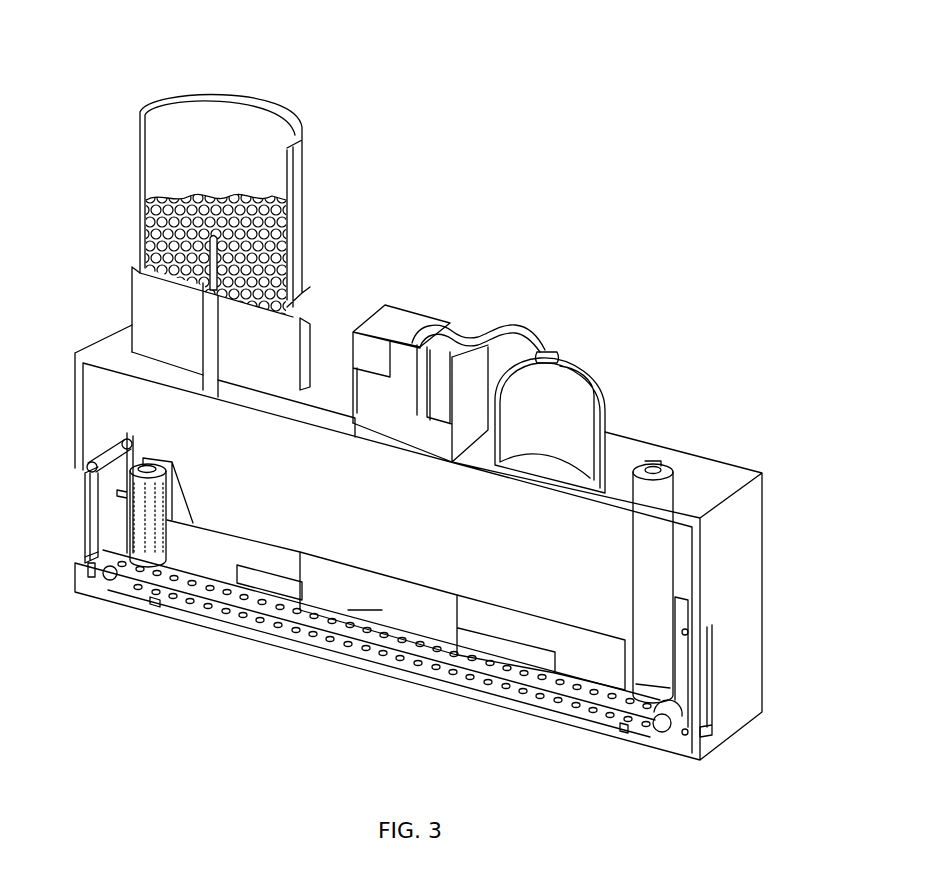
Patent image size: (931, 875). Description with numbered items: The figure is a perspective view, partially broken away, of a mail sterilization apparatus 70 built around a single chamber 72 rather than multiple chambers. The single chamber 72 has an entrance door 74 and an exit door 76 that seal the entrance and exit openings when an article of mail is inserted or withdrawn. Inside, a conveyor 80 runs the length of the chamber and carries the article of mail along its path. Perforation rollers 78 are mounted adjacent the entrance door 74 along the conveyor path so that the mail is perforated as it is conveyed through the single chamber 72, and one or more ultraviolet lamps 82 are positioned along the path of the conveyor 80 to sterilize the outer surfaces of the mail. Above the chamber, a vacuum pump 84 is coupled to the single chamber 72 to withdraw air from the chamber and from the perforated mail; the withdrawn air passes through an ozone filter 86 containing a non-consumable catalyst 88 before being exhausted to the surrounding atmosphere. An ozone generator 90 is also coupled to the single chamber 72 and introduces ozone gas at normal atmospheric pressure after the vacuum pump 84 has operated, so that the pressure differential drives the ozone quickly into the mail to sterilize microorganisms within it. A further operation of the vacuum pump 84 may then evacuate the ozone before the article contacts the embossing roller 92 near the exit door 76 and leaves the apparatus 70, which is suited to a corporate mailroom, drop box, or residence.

The mail sterilization apparatus 70 is at (487, 177).
The single chamber 72 is at (692, 468).
The entrance door 74 is at (103, 540).
The exit door 76 is at (695, 712).
The perforation rollers 78 is at (153, 507).
The conveyor 80 is at (232, 613).
The ultraviolet lamps 82 is at (262, 580).
The vacuum pump 84 is at (140, 307).
The ozone filter 86 is at (295, 257).
The non-consumable catalyst 88 is at (215, 222).
The ozone generator 90 is at (368, 352).
The embossing roller 92 is at (643, 635).